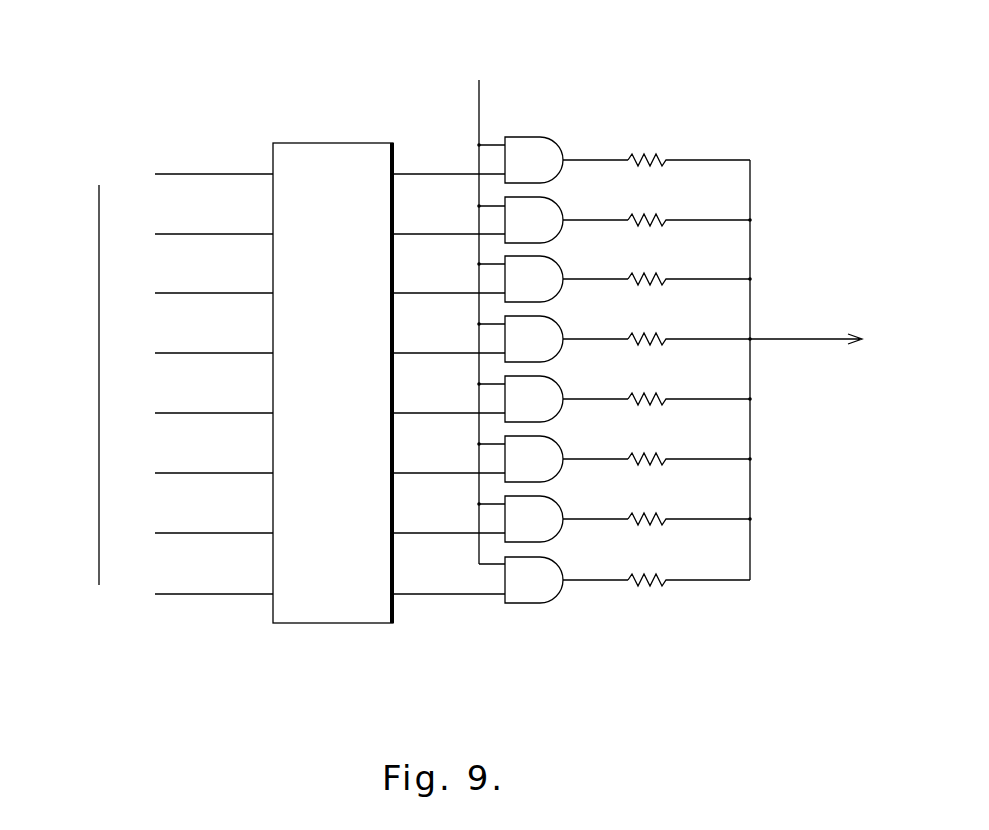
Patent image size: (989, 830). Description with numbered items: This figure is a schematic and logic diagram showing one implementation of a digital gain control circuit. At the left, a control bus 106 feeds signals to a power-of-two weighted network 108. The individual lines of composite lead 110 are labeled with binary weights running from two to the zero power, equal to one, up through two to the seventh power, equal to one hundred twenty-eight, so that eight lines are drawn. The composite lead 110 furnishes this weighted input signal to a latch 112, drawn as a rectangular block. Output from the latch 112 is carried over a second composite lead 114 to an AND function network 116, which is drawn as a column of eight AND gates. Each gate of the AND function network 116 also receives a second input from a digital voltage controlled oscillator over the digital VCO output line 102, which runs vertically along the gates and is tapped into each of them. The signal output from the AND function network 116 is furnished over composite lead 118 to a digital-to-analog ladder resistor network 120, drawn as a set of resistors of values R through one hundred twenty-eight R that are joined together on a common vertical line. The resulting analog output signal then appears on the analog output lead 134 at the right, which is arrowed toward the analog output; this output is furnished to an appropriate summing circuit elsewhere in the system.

The digital VCO output line 102 is at (480, 122).
The control bus 106 is at (99, 188).
The power-of-two weighted network 108 is at (153, 141).
The composite lead 110 is at (203, 173).
The latch 112 is at (338, 143).
The composite lead 114 is at (418, 173).
The AND function network 116 is at (530, 620).
The composite lead 118 is at (582, 159).
The digital-to-analog ladder resistor network 120 is at (666, 141).
The analog output lead 134 is at (775, 338).